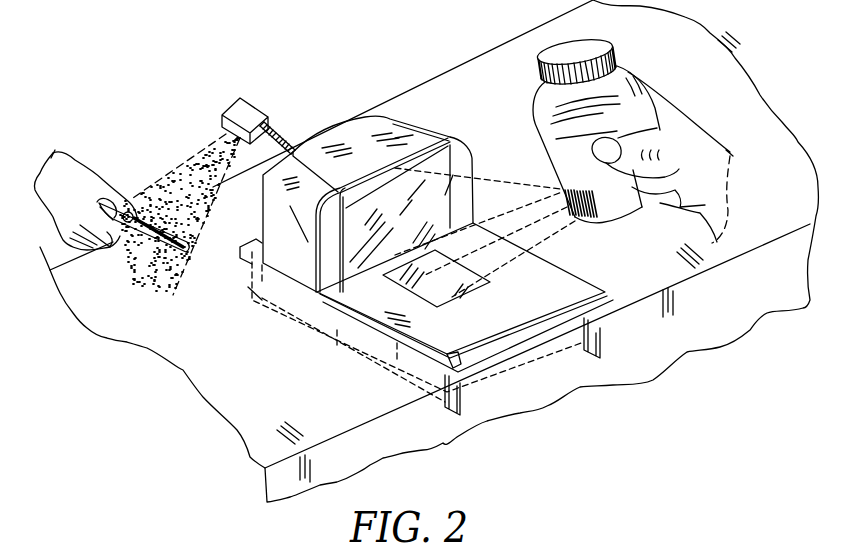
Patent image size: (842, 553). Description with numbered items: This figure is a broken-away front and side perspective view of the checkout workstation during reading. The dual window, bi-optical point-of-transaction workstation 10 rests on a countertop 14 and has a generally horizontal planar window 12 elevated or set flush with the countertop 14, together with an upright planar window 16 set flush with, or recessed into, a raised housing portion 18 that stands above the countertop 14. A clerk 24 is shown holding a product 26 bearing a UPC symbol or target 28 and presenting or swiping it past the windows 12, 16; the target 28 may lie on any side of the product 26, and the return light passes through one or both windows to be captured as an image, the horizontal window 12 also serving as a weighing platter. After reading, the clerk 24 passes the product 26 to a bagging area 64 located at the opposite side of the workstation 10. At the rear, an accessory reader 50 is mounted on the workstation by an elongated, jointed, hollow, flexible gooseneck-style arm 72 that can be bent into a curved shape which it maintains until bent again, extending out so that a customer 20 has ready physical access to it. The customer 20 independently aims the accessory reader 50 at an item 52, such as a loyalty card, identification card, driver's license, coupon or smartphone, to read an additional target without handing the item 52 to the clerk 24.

The point-of-transaction workstation 10 is at (438, 121).
The horizontal planar window 12 is at (450, 295).
The countertop 14 is at (630, 293).
The upright planar window 16 is at (378, 165).
The raised housing portion 18 is at (465, 160).
The customer 20 is at (75, 162).
The clerk 24 is at (712, 150).
The product 26 is at (628, 99).
The UPC symbol / target 28 is at (627, 218).
The accessory reader 50 is at (254, 102).
The item 52 is at (173, 253).
The bagging area 64 is at (205, 367).
The flexible arm 72 is at (287, 143).